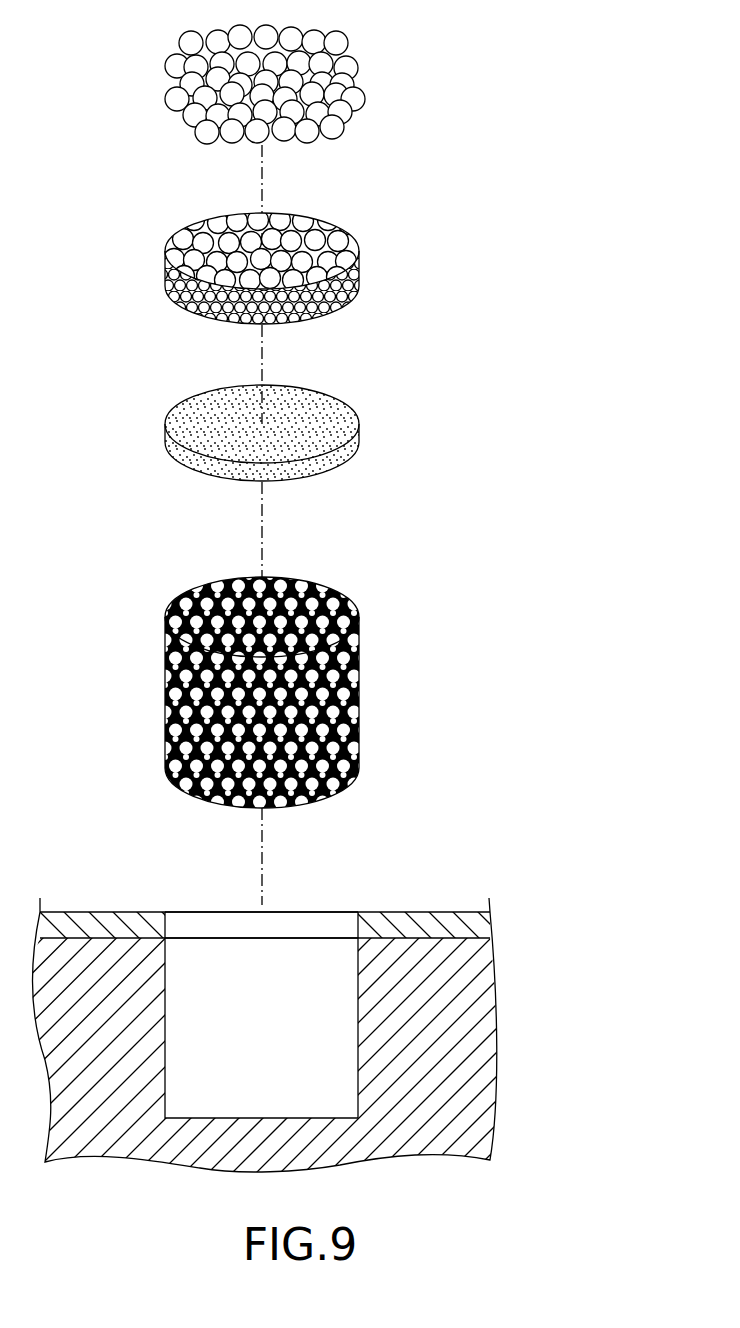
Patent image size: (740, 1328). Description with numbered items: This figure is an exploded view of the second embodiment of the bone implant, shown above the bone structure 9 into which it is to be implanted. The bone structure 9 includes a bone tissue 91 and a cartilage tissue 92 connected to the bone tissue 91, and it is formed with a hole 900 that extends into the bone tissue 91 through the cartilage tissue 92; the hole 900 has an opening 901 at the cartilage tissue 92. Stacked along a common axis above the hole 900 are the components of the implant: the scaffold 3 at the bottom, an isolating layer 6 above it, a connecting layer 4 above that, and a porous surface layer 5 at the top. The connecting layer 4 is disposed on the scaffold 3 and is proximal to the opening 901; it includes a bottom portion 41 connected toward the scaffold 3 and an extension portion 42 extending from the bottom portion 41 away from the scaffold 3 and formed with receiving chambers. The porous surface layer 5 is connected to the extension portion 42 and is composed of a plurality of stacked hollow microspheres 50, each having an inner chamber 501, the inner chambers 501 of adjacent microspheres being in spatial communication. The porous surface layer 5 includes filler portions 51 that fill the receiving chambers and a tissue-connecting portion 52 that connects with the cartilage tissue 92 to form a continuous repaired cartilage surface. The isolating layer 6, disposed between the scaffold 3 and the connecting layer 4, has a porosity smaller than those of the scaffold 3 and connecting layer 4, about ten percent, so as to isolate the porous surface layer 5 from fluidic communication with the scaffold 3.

The scaffold 3 is at (360, 657).
The connecting layer 4 is at (275, 247).
The bottom portion 41 is at (323, 307).
The extension portion 42 is at (233, 255).
The porous surface layer 5 is at (292, 78).
The hollow microspheres 50 is at (168, 60).
The inner chamber 501 is at (160, 248).
The filler portions 51 is at (223, 221).
The tissue-connecting portion 52 is at (333, 127).
The isolating layer 6 is at (368, 427).
The bone structure 9 is at (370, 983).
The bone tissue 91 is at (476, 1006).
The cartilage tissue 92 is at (418, 919).
The hole 900 is at (166, 956).
The opening 901 is at (316, 910).